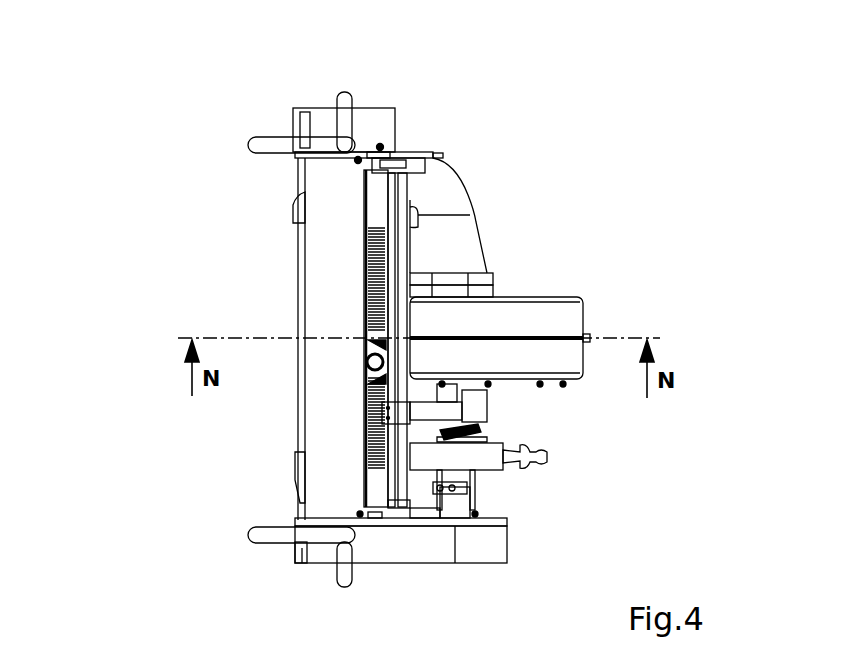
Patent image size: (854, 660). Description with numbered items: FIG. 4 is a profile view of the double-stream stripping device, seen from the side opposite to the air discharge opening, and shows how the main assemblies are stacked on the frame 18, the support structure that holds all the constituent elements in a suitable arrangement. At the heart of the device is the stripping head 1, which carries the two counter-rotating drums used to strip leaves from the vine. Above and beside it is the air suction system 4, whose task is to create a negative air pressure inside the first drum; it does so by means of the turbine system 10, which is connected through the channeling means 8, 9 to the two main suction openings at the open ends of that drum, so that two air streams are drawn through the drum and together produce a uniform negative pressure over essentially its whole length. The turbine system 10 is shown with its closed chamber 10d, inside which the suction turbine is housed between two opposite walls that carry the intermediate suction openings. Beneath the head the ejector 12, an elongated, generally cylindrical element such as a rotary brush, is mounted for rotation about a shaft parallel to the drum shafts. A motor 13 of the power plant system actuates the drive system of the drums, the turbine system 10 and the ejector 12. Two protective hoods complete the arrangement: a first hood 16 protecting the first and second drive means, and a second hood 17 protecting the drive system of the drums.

The stripping head 1 is at (205, 128).
The air suction system 4 is at (497, 176).
The channeling means 8 is at (440, 200).
The channeling means 9 is at (487, 410).
The turbine system 10 is at (600, 304).
The closed chamber 10d is at (525, 322).
The ejector 12 is at (368, 263).
The motor 13 is at (455, 505).
The first hood 16 is at (400, 552).
The second hood 17 is at (385, 130).
The frame 18 is at (370, 372).